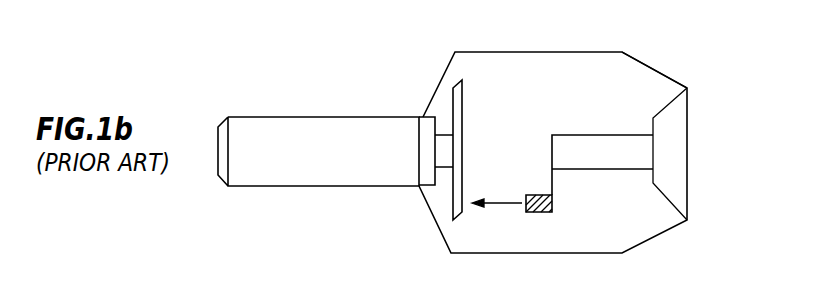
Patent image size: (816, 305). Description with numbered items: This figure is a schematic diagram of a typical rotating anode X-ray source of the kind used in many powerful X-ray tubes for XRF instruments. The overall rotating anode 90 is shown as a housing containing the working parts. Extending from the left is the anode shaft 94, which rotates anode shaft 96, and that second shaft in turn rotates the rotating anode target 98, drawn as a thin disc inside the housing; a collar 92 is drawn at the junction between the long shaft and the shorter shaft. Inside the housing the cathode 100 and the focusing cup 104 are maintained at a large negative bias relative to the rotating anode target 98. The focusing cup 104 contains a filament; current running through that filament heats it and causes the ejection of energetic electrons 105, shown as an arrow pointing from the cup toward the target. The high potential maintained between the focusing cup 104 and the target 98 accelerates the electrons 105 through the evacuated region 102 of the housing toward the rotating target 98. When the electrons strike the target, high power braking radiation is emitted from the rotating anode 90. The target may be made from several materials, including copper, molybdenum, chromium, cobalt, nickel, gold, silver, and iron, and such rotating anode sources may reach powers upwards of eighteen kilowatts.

The rotating anode 90 is at (602, 22).
The collar 92 is at (428, 123).
The anode shaft 94 is at (330, 132).
The anode shaft 96 is at (444, 168).
The rotating anode target 98 is at (463, 97).
The cathode 100 is at (577, 157).
The evacuated region 102 is at (640, 77).
The focusing cup 104 is at (543, 212).
The energetic electrons 105 is at (496, 201).